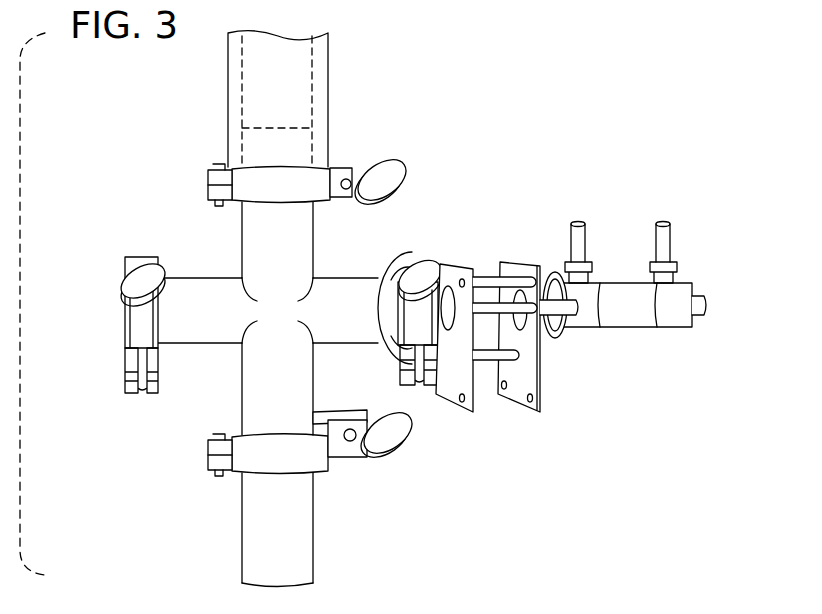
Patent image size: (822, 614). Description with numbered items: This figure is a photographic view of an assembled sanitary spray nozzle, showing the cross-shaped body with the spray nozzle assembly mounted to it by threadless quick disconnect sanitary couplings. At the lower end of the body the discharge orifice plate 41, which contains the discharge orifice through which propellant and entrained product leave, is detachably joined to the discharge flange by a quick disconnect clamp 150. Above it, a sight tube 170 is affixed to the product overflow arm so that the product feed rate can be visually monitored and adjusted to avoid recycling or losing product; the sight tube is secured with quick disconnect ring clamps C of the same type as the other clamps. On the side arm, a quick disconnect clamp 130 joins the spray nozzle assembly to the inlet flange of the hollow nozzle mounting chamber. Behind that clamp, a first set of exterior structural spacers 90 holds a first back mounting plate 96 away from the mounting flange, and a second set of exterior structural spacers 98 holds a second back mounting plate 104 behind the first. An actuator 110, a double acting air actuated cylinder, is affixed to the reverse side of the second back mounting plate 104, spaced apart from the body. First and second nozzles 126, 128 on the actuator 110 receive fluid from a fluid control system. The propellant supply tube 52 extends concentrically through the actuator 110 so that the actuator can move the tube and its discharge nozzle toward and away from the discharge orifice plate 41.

The sight tube 170 is at (307, 50).
The quick disconnect ring clamps C is at (331, 166).
The quick disconnect clamp 150 is at (143, 256).
The discharge orifice plate 41 is at (125, 322).
The quick disconnect clamp 130 is at (401, 258).
The first set of exterior structural spacers 90 is at (425, 349).
The first back mounting plate 96 is at (467, 413).
The second set of exterior structural spacers 98 is at (485, 362).
The second back mounting plate 104 is at (545, 410).
The actuator 110 is at (622, 328).
The propellant supply tube 52 is at (490, 300).
The first nozzle 126 is at (573, 240).
The second nozzle 128 is at (660, 240).